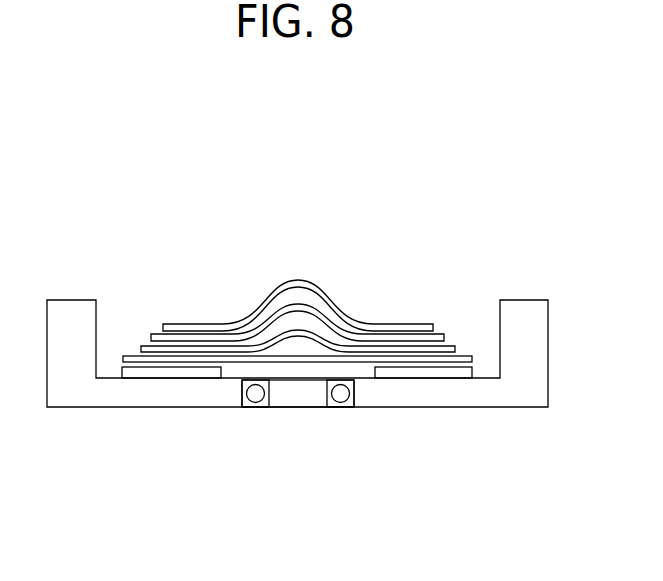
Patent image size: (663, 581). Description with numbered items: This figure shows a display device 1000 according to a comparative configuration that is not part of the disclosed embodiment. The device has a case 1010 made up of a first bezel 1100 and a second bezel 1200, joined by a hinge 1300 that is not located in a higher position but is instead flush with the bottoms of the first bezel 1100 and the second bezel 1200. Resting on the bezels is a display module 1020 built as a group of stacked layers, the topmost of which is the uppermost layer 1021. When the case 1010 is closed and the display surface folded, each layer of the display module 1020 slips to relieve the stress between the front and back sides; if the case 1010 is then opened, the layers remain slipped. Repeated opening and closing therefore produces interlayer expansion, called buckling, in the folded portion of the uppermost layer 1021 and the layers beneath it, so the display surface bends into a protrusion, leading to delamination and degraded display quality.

The display device 1000 is at (524, 188).
The case 1010 is at (505, 508).
The display module 1020 is at (373, 315).
The uppermost layer 1021 is at (428, 324).
The first bezel 1100 is at (469, 393).
The second bezel 1200 is at (125, 393).
The hinge 1300 is at (298, 393).